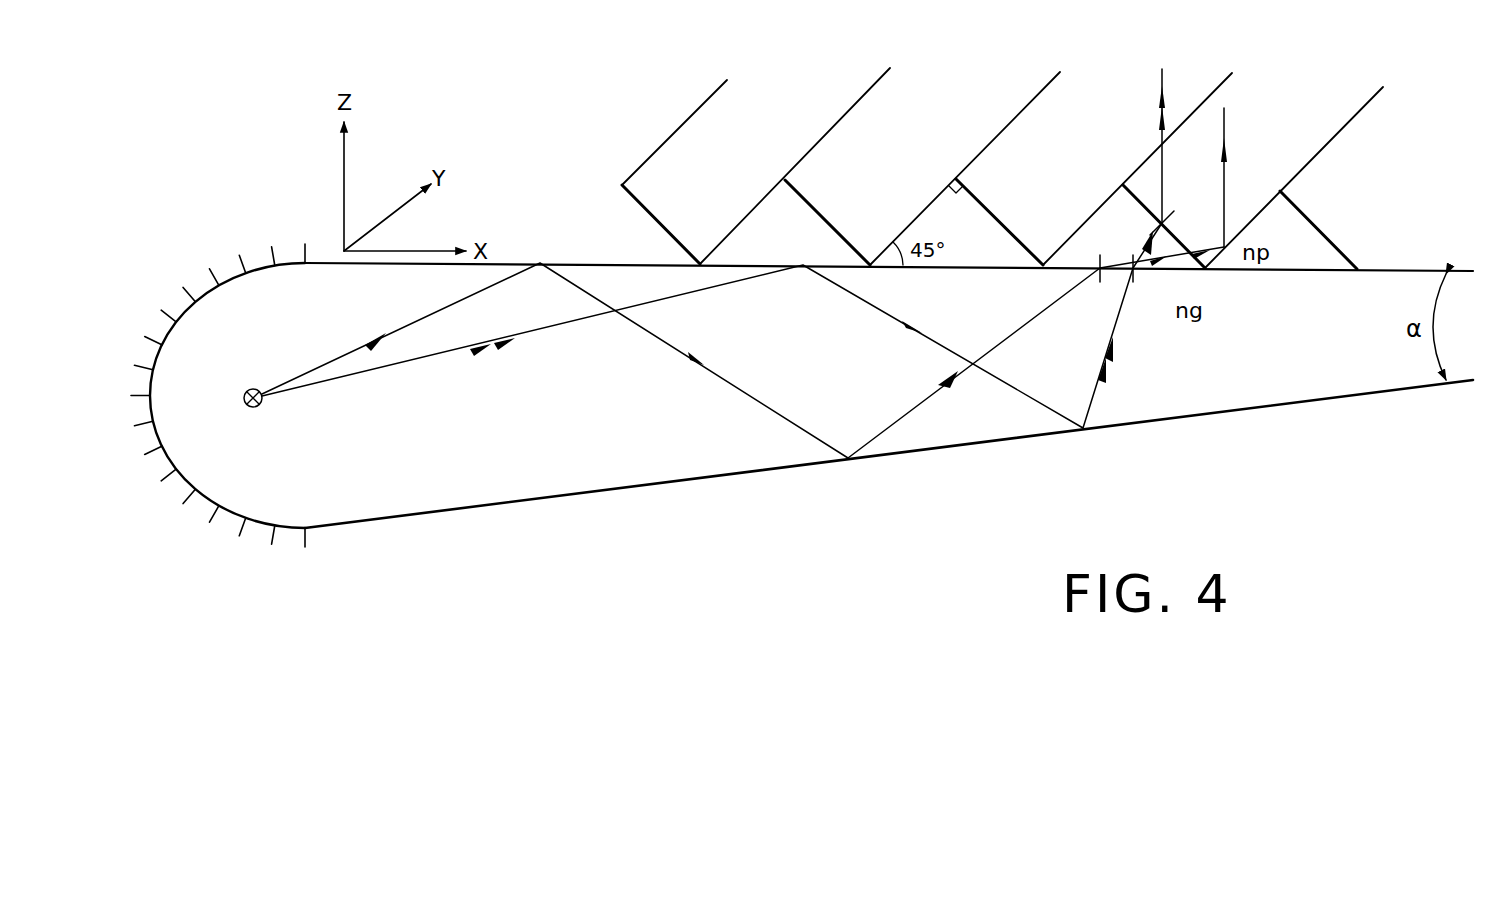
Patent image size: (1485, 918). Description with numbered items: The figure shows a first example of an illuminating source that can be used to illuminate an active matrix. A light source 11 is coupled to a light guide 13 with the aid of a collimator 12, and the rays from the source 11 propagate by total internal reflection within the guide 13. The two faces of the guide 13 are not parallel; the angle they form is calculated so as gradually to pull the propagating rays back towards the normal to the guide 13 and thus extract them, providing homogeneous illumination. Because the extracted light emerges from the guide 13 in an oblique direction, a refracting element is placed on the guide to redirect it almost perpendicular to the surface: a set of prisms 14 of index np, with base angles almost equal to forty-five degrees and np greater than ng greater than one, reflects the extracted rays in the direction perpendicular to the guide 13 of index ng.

The light source 11 is at (259, 407).
The collimator 12 is at (194, 284).
The light guide 13 is at (510, 503).
The prism sheet 14 is at (1336, 245).